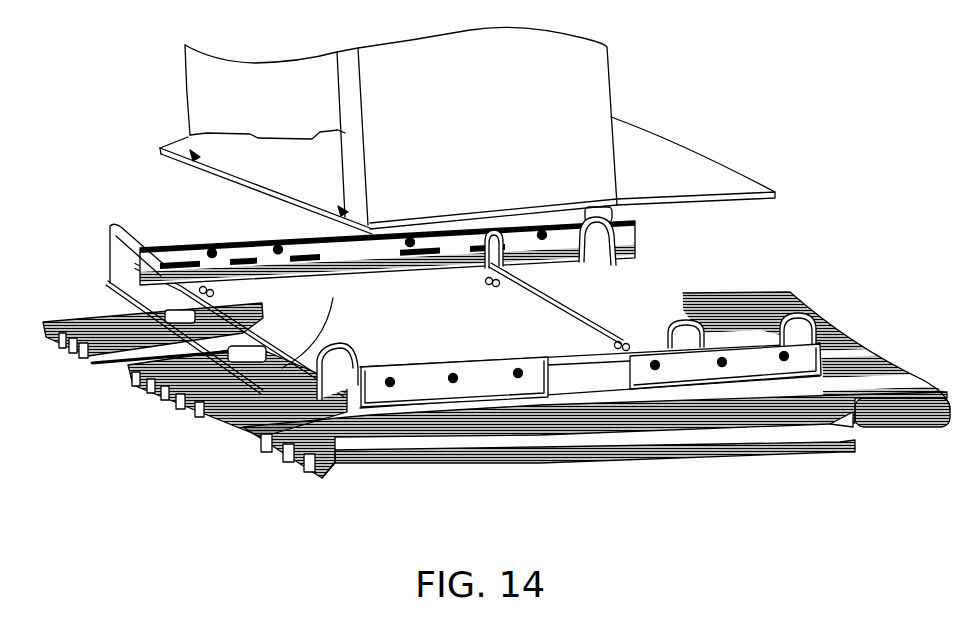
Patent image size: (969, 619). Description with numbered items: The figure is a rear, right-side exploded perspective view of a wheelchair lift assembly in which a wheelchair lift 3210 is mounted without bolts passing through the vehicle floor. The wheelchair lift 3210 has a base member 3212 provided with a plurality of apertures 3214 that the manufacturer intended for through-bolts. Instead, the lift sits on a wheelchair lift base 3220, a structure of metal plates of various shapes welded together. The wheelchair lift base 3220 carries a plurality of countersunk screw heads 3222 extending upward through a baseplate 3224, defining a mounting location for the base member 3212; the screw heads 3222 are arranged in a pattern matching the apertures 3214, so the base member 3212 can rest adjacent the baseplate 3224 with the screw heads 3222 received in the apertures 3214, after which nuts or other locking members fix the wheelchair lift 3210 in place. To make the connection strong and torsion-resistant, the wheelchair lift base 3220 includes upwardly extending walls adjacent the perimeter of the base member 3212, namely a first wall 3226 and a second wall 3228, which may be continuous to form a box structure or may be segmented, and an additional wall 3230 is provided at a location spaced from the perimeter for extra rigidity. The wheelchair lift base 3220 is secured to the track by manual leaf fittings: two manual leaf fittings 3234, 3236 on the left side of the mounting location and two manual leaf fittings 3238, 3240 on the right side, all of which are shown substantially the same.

The wheelchair lift 3210 is at (490, 125).
The base member 3212 is at (628, 223).
The apertures 3214 is at (542, 285).
The wheelchair lift base 3220 is at (660, 317).
The countersunk screw heads 3222 is at (622, 338).
The baseplate 3224 is at (245, 408).
The first wall 3226 is at (120, 240).
The second wall 3228 is at (690, 337).
The wall 3230 is at (625, 235).
The manual leaf fitting 3234 is at (200, 226).
The manual leaf fitting 3236 is at (457, 265).
The manual leaf fitting 3238 is at (420, 408).
The manual leaf fitting 3240 is at (690, 378).